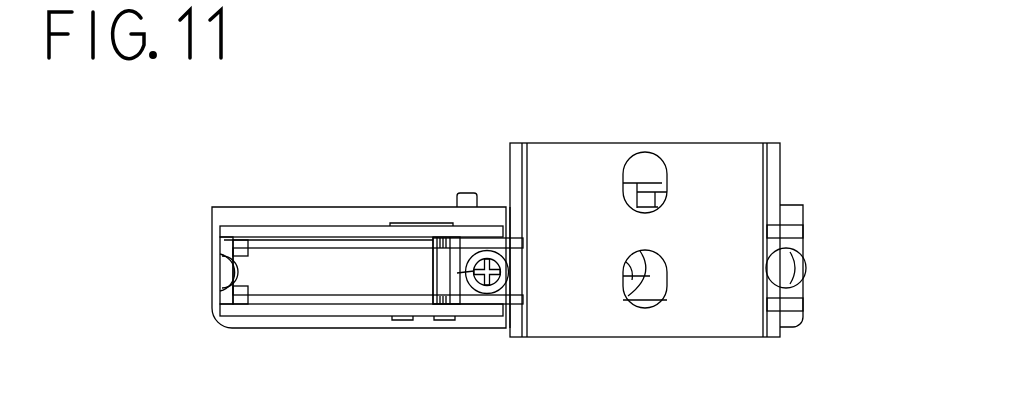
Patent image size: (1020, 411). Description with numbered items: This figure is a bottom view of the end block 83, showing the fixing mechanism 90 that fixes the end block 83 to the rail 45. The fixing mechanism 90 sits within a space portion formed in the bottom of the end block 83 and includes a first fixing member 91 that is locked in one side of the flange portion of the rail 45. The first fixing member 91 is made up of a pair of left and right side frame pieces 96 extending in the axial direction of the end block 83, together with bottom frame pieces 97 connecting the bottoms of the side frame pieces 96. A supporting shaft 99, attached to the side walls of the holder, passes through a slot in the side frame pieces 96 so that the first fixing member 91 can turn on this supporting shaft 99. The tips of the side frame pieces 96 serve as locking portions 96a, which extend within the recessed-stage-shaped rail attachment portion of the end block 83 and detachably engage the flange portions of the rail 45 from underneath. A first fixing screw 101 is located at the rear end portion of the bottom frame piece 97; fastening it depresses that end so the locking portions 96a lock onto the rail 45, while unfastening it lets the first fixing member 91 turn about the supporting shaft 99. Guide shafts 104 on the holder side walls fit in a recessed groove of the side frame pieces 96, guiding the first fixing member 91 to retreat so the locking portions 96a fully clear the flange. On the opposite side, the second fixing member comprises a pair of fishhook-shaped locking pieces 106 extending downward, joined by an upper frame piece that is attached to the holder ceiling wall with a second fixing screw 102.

The end block 83 is at (302, 98).
The fixing mechanism 90 is at (350, 222).
The first fixing member 91 is at (315, 317).
The bottom frame piece 97 is at (260, 273).
The first fixing screw 101 is at (230, 268).
The supporting shaft 99 is at (400, 319).
The guide shaft 104 is at (446, 319).
The side frame piece 96 is at (463, 243).
The locking portion 96a is at (527, 238).
The rail 45 is at (702, 150).
The locking piece 106 is at (795, 232).
The second fixing screw 102 is at (792, 268).